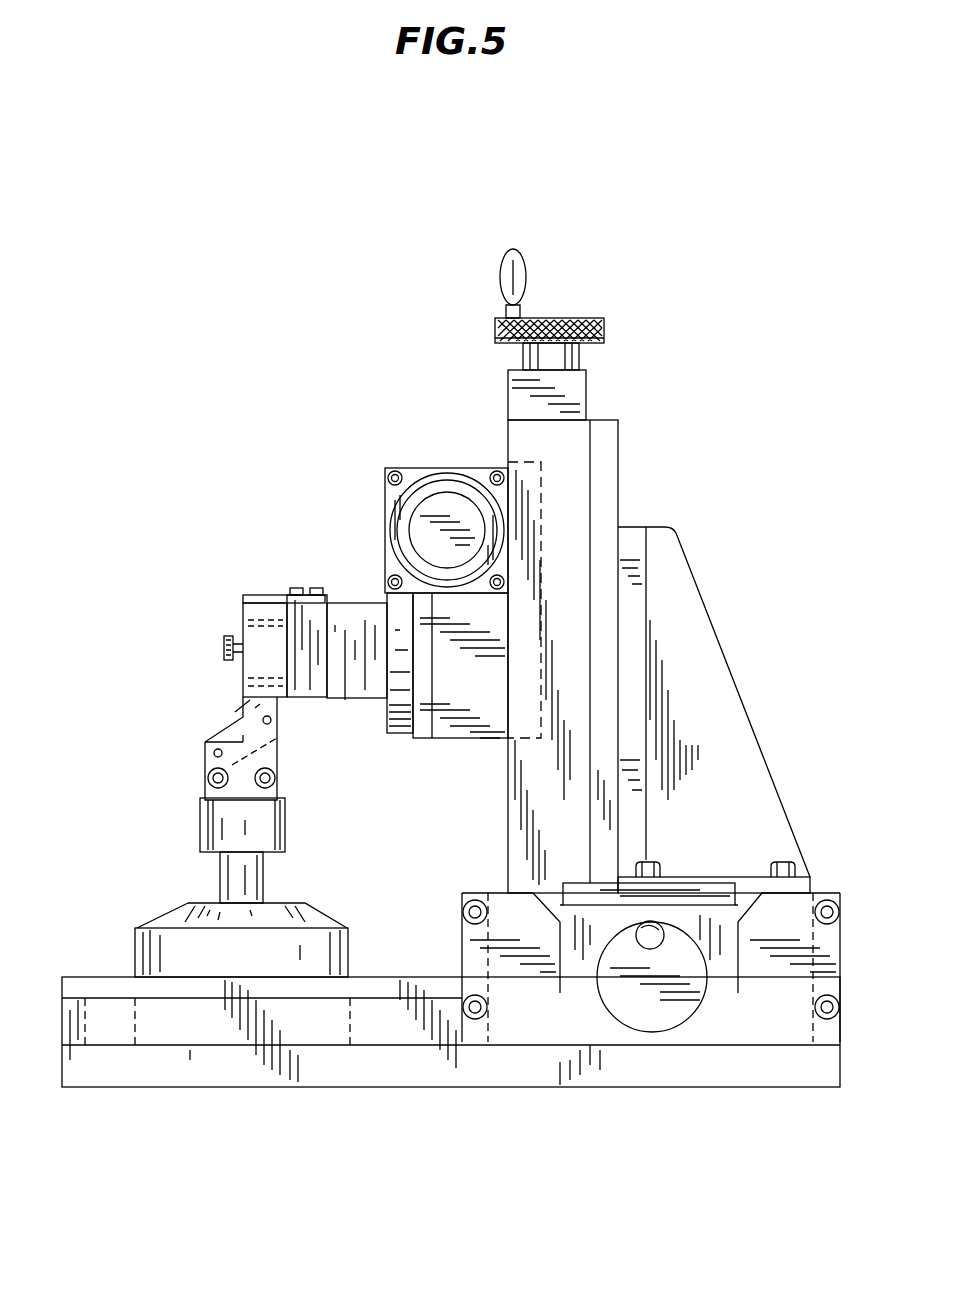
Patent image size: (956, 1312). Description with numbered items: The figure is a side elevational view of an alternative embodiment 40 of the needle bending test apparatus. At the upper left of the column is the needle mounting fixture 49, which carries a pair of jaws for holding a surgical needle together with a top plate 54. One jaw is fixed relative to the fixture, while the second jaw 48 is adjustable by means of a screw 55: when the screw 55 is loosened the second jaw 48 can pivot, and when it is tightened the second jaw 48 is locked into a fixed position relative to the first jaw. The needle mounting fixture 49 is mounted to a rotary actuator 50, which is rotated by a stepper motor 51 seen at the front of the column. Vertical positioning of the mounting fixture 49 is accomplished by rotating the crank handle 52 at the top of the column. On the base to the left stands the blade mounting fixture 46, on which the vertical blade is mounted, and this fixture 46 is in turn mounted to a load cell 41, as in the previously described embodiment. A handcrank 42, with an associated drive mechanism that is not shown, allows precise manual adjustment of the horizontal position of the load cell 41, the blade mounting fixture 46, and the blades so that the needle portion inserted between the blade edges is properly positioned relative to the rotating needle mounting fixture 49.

The alternative embodiment 40 is at (422, 1116).
The load cell 41 is at (254, 970).
The handcrank 42 is at (643, 1020).
The blade mounting fixture 46 is at (200, 828).
The second jaw 48 is at (243, 618).
The needle mounting fixture 49 is at (233, 690).
The rotary actuator 50 is at (402, 738).
The stepper motor 51 is at (447, 492).
The crank handle 52 is at (578, 318).
The top plate 54 is at (258, 598).
The screw 55 is at (224, 646).